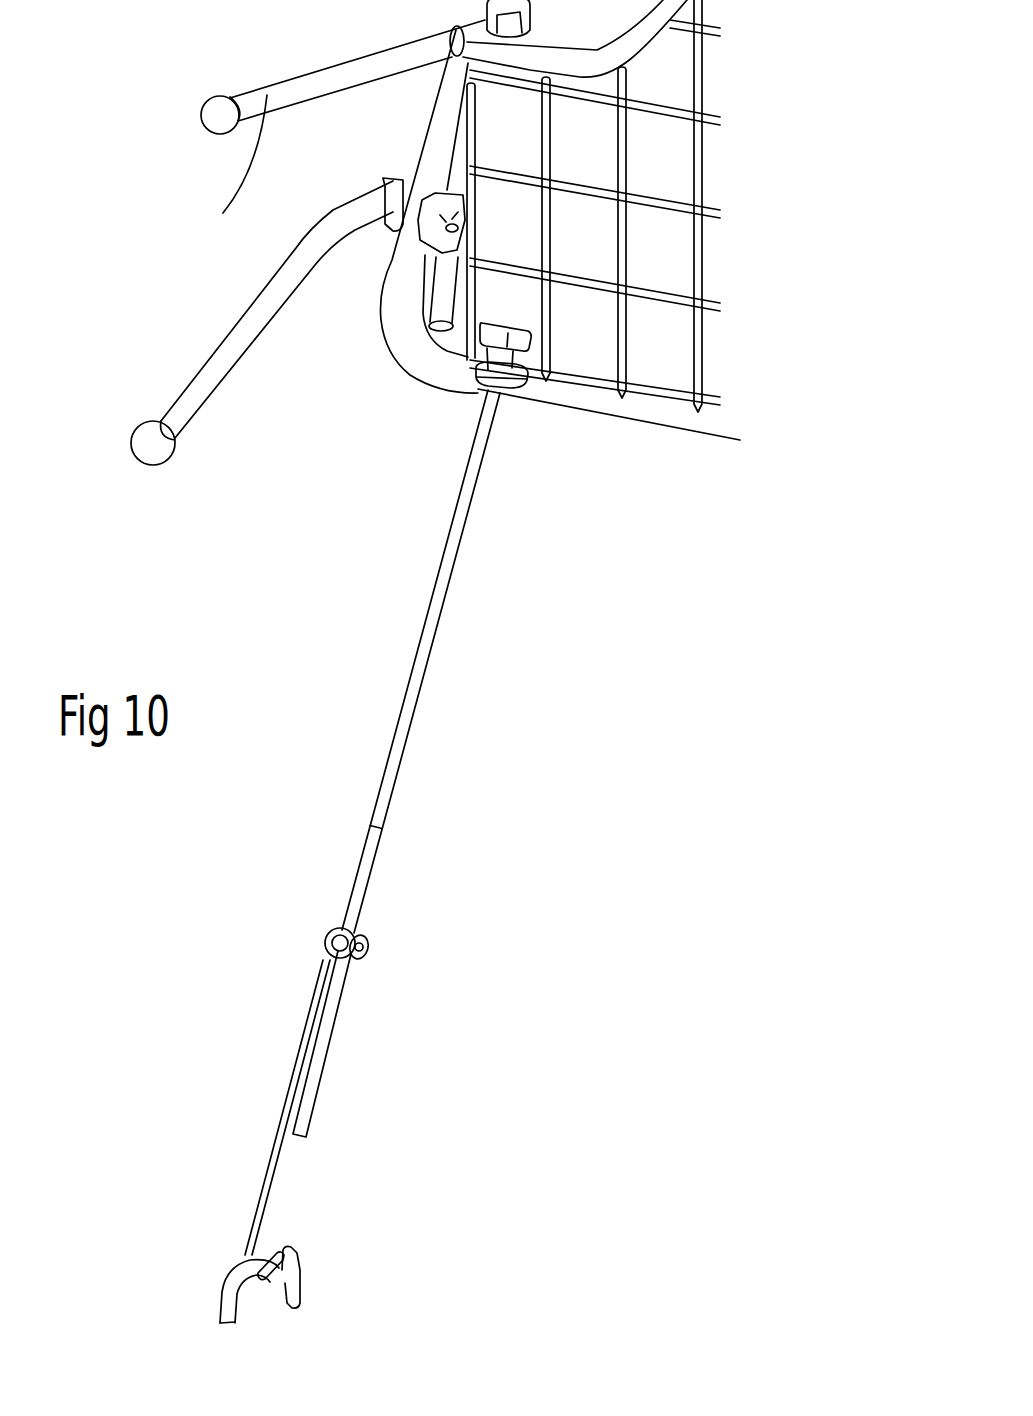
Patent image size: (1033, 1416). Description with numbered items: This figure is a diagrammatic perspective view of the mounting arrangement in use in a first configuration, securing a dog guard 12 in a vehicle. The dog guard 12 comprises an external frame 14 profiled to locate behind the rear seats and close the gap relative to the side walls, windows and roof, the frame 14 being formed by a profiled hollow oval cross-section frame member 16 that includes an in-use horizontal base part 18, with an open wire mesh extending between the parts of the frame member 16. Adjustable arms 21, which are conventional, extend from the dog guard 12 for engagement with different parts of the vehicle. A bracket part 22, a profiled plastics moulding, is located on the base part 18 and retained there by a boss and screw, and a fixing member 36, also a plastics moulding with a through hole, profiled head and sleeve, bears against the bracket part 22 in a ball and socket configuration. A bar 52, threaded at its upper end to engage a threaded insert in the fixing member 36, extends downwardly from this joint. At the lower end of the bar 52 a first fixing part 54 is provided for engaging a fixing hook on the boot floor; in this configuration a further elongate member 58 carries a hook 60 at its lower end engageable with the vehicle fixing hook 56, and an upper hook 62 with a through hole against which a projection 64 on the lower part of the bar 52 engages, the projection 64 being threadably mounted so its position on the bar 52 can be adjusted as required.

The dog guard 12 is at (676, 422).
The external frame 14 is at (600, 402).
The frame member 16 is at (440, 127).
The base part 18 is at (708, 423).
The adjustable arms 21 is at (256, 318).
The bracket part 22 is at (480, 383).
The fixing member 36 is at (502, 355).
The bar 52 is at (387, 782).
The first fixing part 54 is at (345, 1137).
The vehicle fixing hook 56 is at (295, 1277).
The further elongate member 58 is at (282, 1163).
The hook 60 is at (272, 1252).
The upper hook 62 is at (367, 943).
The projection 64 is at (330, 934).